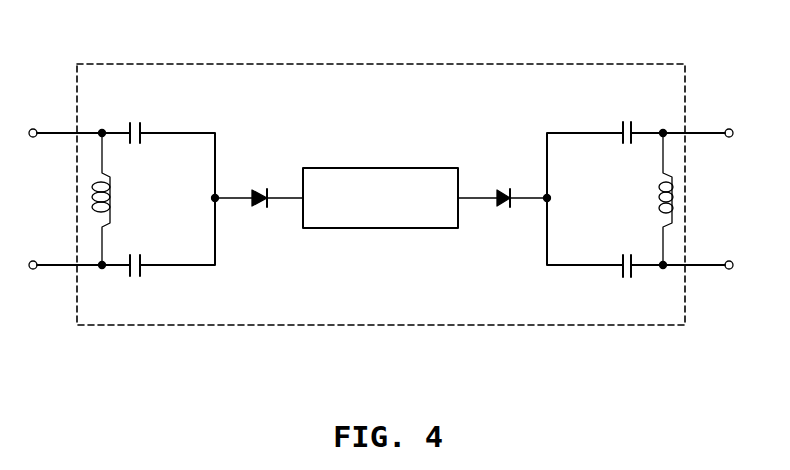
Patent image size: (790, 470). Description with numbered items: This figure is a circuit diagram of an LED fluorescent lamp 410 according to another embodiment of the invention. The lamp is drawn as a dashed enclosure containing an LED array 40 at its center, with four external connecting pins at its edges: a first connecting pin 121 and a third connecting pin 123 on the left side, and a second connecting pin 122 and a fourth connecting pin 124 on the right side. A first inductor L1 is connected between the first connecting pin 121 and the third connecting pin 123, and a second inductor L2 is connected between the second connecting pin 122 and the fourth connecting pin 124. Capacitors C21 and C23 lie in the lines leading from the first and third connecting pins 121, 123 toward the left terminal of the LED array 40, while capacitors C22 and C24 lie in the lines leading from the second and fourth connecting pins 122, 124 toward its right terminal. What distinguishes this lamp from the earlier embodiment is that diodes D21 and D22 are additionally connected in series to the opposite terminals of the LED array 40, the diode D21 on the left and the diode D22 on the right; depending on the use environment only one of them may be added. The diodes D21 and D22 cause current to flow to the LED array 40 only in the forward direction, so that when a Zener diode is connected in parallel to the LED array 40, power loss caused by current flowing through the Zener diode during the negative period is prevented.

The LED fluorescent lamp 410 is at (495, 65).
The LED array 40 is at (383, 167).
The first connecting pin 121 is at (65, 124).
The second connecting pin 122 is at (698, 124).
The third connecting pin 123 is at (65, 256).
The fourth connecting pin 124 is at (698, 256).
The capacitor C21 is at (125, 122).
The capacitor C22 is at (633, 122).
The capacitor C23 is at (131, 254).
The capacitor C24 is at (634, 254).
The first inductor L1 is at (111, 199).
The second inductor L2 is at (651, 199).
The diode D21 is at (259, 188).
The diode D22 is at (502, 188).